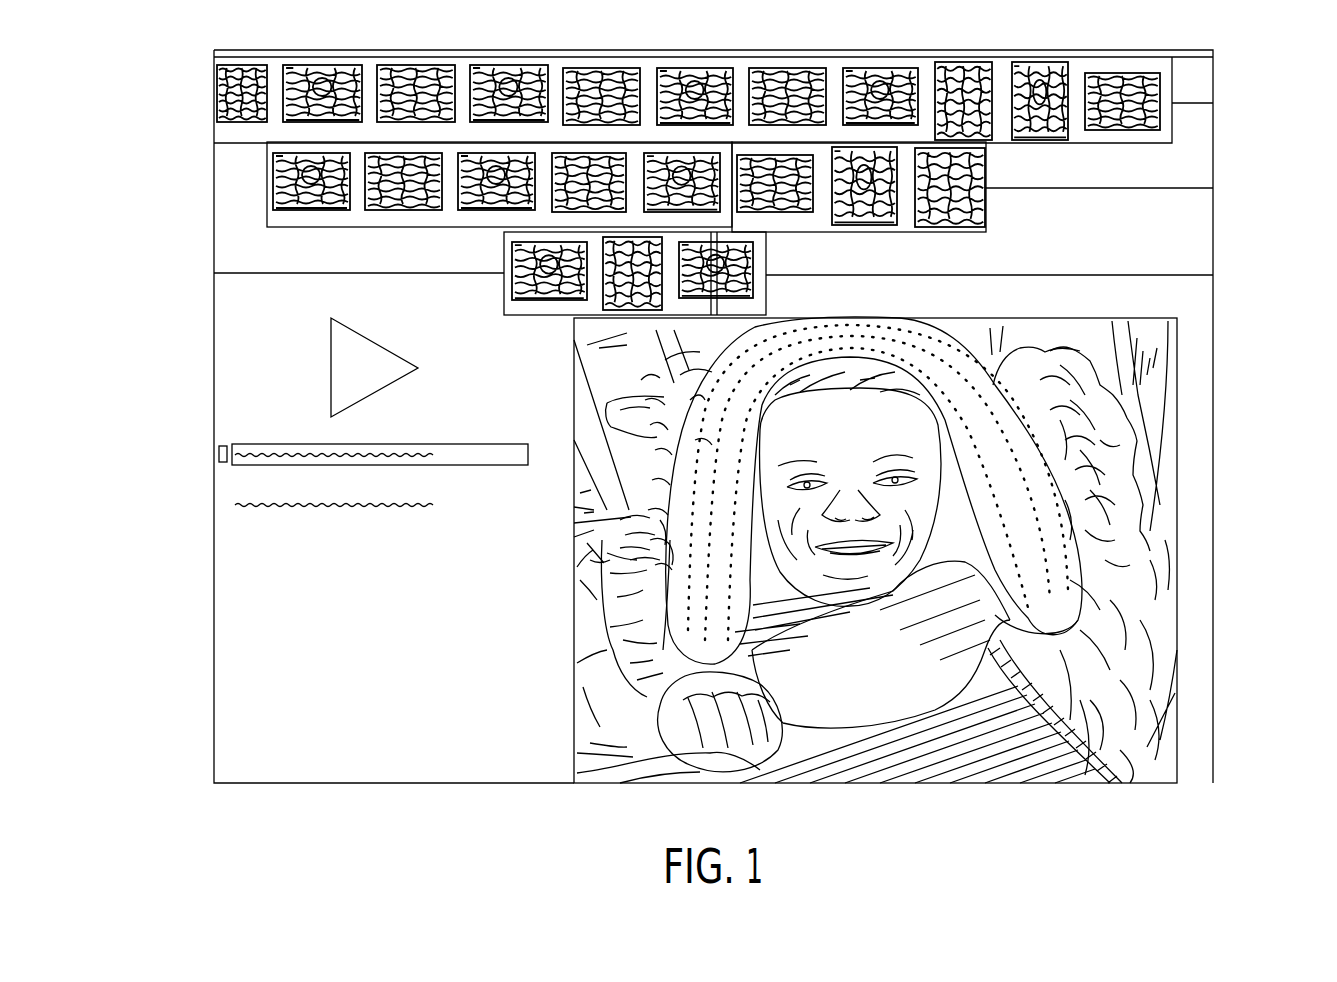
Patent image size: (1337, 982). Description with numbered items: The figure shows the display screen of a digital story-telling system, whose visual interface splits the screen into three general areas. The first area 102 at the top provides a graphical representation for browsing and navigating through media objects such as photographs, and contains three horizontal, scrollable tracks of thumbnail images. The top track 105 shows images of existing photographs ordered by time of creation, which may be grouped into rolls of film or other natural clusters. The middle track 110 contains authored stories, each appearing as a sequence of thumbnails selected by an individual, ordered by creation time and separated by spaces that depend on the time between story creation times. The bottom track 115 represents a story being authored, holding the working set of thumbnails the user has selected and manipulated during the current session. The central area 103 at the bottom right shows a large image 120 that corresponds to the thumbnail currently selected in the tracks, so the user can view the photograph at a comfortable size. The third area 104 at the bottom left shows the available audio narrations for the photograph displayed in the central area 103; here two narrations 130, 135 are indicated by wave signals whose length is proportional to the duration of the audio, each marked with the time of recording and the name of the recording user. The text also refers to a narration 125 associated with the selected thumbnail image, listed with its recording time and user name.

The first area 102 is at (1231, 55).
The central area 103 is at (1231, 287).
The third area 104 is at (574, 793).
The top track 105 is at (214, 93).
The middle track 110 is at (267, 184).
The bottom track 115 is at (214, 273).
The large image 120 is at (1017, 783).
The narration 125 is at (214, 728).
The narration 130 is at (214, 473).
The narration 135 is at (214, 525).